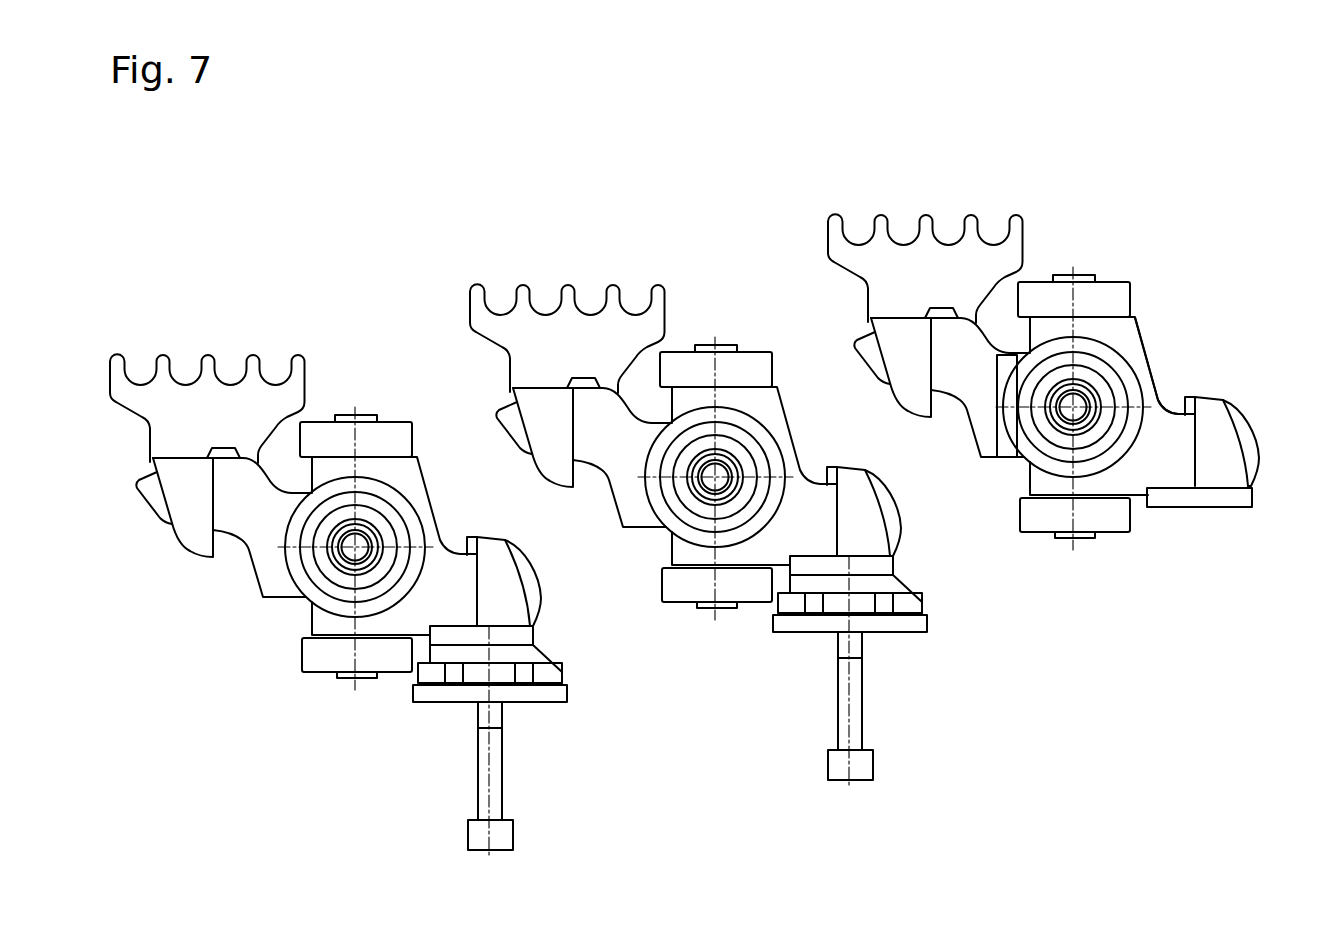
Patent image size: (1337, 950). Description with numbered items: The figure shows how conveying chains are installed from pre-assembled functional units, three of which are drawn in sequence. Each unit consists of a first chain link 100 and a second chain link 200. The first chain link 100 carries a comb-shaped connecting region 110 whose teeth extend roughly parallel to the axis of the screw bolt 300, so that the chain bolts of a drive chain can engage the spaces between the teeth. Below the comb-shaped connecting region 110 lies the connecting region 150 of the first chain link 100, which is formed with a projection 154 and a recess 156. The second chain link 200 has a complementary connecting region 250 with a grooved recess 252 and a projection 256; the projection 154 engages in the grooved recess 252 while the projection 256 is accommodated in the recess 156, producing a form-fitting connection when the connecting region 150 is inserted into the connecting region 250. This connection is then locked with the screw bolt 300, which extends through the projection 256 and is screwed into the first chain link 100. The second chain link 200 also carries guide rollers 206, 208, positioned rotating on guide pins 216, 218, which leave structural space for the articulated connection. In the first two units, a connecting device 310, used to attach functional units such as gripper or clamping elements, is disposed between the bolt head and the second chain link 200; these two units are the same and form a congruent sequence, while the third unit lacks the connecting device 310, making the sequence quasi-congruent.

The first chain link 100 is at (584, 342).
The comb-shaped connecting region 110 is at (168, 353).
The connecting region 150 is at (540, 437).
The projection 154 is at (910, 402).
The recess 156 is at (955, 425).
The second chain link 200 is at (818, 472).
The guide roller 206 is at (1037, 520).
The guide roller 208 is at (1117, 297).
The guide pin 216 is at (1085, 537).
The guide pin 218 is at (1080, 275).
The connecting region 250 is at (809, 530).
The grooved recess 252 is at (1178, 395).
The projection 256 is at (1213, 408).
The screw bolt 300 is at (852, 707).
The connecting device 310 is at (540, 695).